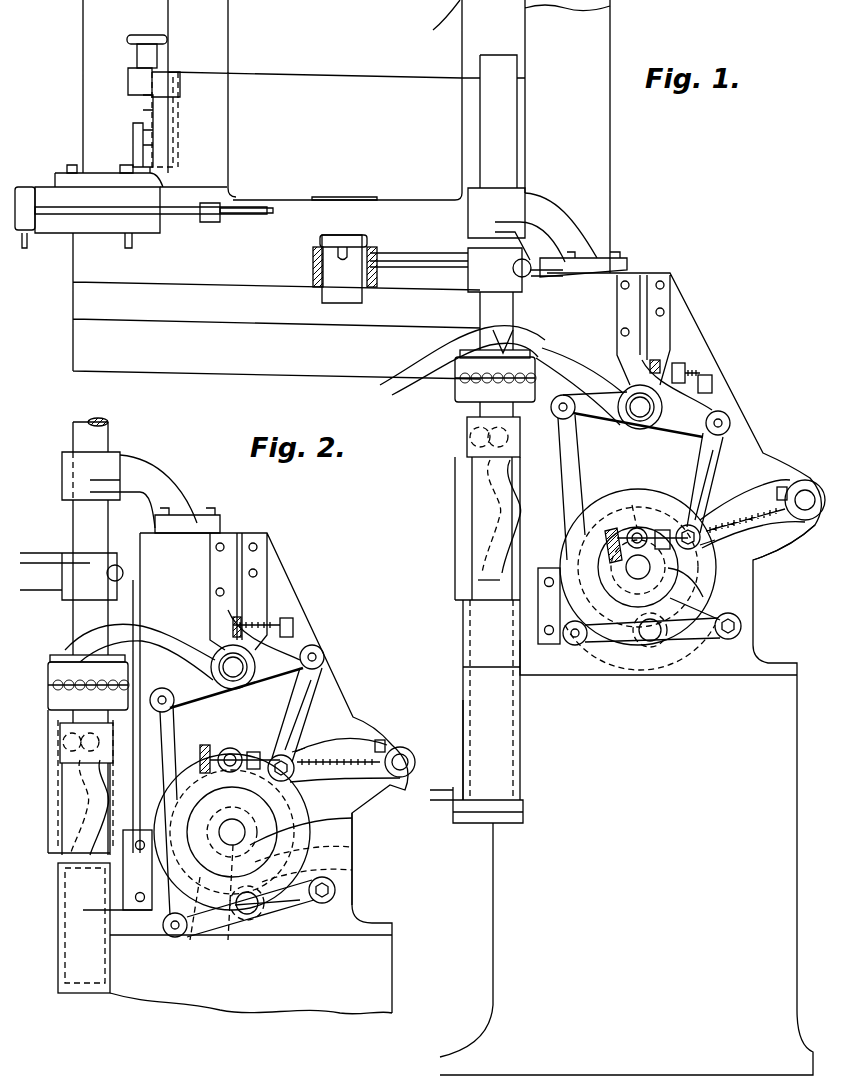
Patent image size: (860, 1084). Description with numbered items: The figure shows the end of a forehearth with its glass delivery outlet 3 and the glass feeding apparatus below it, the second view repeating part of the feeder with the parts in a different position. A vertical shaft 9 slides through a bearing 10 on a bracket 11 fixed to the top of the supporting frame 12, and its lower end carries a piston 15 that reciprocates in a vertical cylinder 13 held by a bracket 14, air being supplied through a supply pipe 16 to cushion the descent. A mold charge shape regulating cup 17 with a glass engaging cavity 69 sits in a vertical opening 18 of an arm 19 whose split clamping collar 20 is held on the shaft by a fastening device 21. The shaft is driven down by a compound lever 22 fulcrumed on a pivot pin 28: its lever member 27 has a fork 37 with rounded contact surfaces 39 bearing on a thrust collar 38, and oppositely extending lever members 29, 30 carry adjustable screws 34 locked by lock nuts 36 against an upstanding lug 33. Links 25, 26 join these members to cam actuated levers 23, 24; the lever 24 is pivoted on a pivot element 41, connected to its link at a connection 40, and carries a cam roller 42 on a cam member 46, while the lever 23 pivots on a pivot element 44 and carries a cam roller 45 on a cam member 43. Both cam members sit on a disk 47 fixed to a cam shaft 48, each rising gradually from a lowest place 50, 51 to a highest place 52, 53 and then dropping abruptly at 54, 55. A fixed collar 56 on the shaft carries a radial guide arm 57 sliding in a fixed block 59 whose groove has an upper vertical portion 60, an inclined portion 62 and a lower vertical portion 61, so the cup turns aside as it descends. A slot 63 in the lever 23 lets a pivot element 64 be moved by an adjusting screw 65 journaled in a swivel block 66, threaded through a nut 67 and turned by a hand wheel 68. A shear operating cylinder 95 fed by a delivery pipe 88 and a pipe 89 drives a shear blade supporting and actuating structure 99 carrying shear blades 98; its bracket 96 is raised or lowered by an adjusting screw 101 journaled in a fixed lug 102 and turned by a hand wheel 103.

In FIG. 1, the glass delivery outlet 3 is at (345, 200).
In FIG. 1, the vertical shaft 9 is at (497, 55).
In FIG. 2, the vertical shaft 9 is at (100, 438).
In FIG. 1, the bearing 10 is at (470, 210).
In FIG. 2, the bearing 10 is at (118, 460).
In FIG. 1, the bracket 11 is at (590, 245).
In FIG. 2, the bracket 11 is at (158, 491).
In FIG. 1, the supporting frame 12 is at (655, 275).
In FIG. 2, the supporting frame 12 is at (393, 970).
In FIG. 1, the vertical cylinder 13 is at (463, 700).
In FIG. 2, the vertical cylinder 13 is at (58, 940).
In FIG. 1, the bracket 14 is at (545, 648).
In FIG. 2, the bracket 14 is at (137, 870).
In FIG. 1, the piston 15 is at (473, 665).
In FIG. 1, the supply pipe 16 is at (450, 785).
In FIG. 1, the mold charge shape regulating cup 17 is at (350, 275).
In FIG. 1, the vertical opening 18 is at (313, 267).
In FIG. 1, the arm 19 is at (430, 253).
In FIG. 2, the arm 19 is at (45, 585).
In FIG. 1, the split clamping collar 20 is at (485, 270).
In FIG. 1, the fastening device 21 is at (615, 262).
In FIG. 2, the fastening device 21 is at (187, 520).
In FIG. 1, the compound lever 22 is at (660, 365).
In FIG. 1, the cam actuated lever 23 is at (745, 520).
In FIG. 2, the cam actuated lever 23 is at (405, 755).
In FIG. 1, the cam actuated lever 24 is at (705, 640).
In FIG. 2, the cam actuated lever 24 is at (300, 905).
In FIG. 1, the link 25 is at (700, 480).
In FIG. 2, the link 25 is at (308, 690).
In FIG. 1, the link 26 is at (590, 470).
In FIG. 2, the link 26 is at (168, 735).
In FIG. 1, the lever member 27 is at (580, 365).
In FIG. 2, the lever member 27 is at (160, 635).
In FIG. 1, the supporting pivot pin 28 is at (640, 410).
In FIG. 2, the supporting pivot pin 28 is at (260, 650).
In FIG. 1, the lever member 29 is at (677, 433).
In FIG. 2, the lever member 29 is at (312, 648).
In FIG. 1, the lever member 30 is at (568, 420).
In FIG. 2, the lever member 30 is at (167, 690).
In FIG. 1, the upstanding lug 33 is at (670, 353).
In FIG. 2, the upstanding lug 33 is at (265, 600).
In FIG. 1, the adjustable screw 34 is at (705, 382).
In FIG. 2, the adjustable screw 34 is at (285, 605).
In FIG. 1, the lock nuts 36 is at (680, 372).
In FIG. 1, the fork 37 is at (550, 337).
In FIG. 2, the fork 37 is at (67, 648).
In FIG. 1, the thrust collar 38 is at (455, 360).
In FIG. 2, the thrust collar 38 is at (48, 690).
In FIG. 1, the rounded contact surfaces 39 is at (505, 350).
In FIG. 1, the connection 40 is at (577, 645).
In FIG. 2, the connection 40 is at (170, 935).
In FIG. 1, the pivot element 41 is at (741, 626).
In FIG. 2, the pivot element 41 is at (336, 890).
In FIG. 1, the cam roller 42 is at (655, 645).
In FIG. 2, the cam roller 42 is at (255, 920).
In FIG. 1, the cam member 43 is at (690, 560).
In FIG. 2, the cam member 43 is at (356, 810).
In FIG. 1, the pivot element 44 is at (805, 500).
In FIG. 2, the pivot element 44 is at (400, 762).
In FIG. 1, the cam roller 45 is at (645, 528).
In FIG. 2, the cam roller 45 is at (230, 748).
In FIG. 1, the cam member 46 is at (635, 510).
In FIG. 2, the cam member 46 is at (192, 940).
In FIG. 1, the disk 47 is at (703, 597).
In FIG. 2, the disk 47 is at (275, 912).
In FIG. 2, the cam shaft 48 is at (229, 940).
In FIG. 1, the lowest place 50 is at (650, 575).
In FIG. 2, the lowest place 50 is at (215, 836).
In FIG. 1, the lowest place 51 is at (665, 645).
In FIG. 2, the lowest place 51 is at (352, 818).
In FIG. 1, the highest place 52 is at (740, 510).
In FIG. 2, the highest place 52 is at (205, 750).
In FIG. 1, the highest place 53 is at (628, 690).
In FIG. 2, the highest place 53 is at (352, 870).
In FIG. 2, the abrupt slope 54 is at (222, 805).
In FIG. 1, the abrupt slope 55 is at (623, 657).
In FIG. 2, the abrupt slope 55 is at (352, 847).
In FIG. 1, the fixed collar 56 is at (507, 487).
In FIG. 2, the fixed collar 56 is at (90, 780).
In FIG. 1, the radial guide arm 57 is at (470, 435).
In FIG. 2, the radial guide arm 57 is at (60, 760).
In FIG. 1, the fixed block 59 is at (458, 535).
In FIG. 2, the fixed block 59 is at (52, 803).
In FIG. 1, the upper vertical portion 60 is at (470, 455).
In FIG. 2, the upper vertical portion 60 is at (60, 740).
In FIG. 1, the lower vertical portion 61 is at (455, 590).
In FIG. 2, the lower vertical portion 61 is at (48, 860).
In FIG. 1, the inclined portion 62 is at (500, 555).
In FIG. 2, the inclined portion 62 is at (75, 840).
In FIG. 1, the slot 63 is at (780, 545).
In FIG. 1, the pivot element 64 is at (698, 530).
In FIG. 2, the pivot element 64 is at (300, 752).
In FIG. 1, the adjusting screw 65 is at (782, 490).
In FIG. 2, the adjusting screw 65 is at (378, 745).
In FIG. 1, the swivel block 66 is at (660, 545).
In FIG. 2, the swivel block 66 is at (252, 752).
In FIG. 1, the nut 67 is at (700, 540).
In FIG. 2, the nut 67 is at (295, 762).
In FIG. 1, the hand wheel 68 is at (610, 545).
In FIG. 1, the glass engaging cavity 69 is at (320, 238).
In FIG. 1, the delivery pipe 88 is at (28, 232).
In FIG. 1, the pipe 89 is at (125, 240).
In FIG. 1, the shear operating cylinder 95 is at (50, 187).
In FIG. 1, the bracket 96 is at (100, 178).
In FIG. 1, the shear blades 98 is at (250, 215).
In FIG. 1, the shear blade supporting and actuating structure 99 is at (195, 222).
In FIG. 1, the adjusting screw 101 is at (143, 110).
In FIG. 1, the fixed lug 102 is at (130, 80).
In FIG. 1, the hand wheel 103 is at (130, 40).